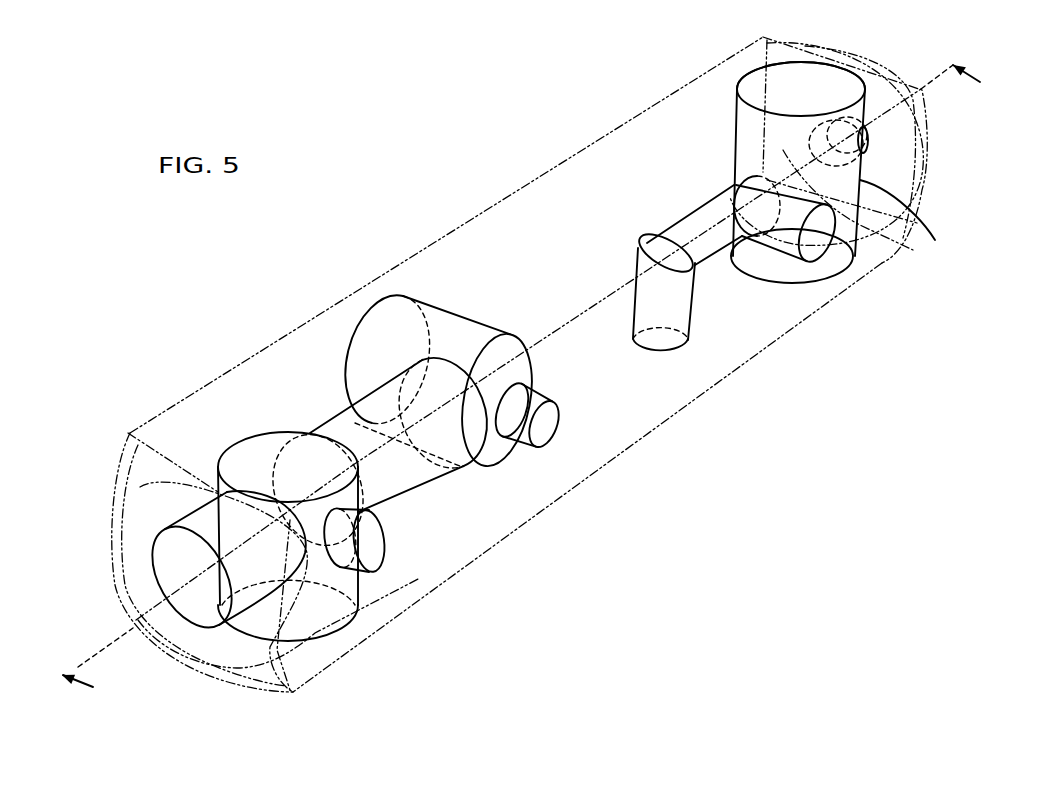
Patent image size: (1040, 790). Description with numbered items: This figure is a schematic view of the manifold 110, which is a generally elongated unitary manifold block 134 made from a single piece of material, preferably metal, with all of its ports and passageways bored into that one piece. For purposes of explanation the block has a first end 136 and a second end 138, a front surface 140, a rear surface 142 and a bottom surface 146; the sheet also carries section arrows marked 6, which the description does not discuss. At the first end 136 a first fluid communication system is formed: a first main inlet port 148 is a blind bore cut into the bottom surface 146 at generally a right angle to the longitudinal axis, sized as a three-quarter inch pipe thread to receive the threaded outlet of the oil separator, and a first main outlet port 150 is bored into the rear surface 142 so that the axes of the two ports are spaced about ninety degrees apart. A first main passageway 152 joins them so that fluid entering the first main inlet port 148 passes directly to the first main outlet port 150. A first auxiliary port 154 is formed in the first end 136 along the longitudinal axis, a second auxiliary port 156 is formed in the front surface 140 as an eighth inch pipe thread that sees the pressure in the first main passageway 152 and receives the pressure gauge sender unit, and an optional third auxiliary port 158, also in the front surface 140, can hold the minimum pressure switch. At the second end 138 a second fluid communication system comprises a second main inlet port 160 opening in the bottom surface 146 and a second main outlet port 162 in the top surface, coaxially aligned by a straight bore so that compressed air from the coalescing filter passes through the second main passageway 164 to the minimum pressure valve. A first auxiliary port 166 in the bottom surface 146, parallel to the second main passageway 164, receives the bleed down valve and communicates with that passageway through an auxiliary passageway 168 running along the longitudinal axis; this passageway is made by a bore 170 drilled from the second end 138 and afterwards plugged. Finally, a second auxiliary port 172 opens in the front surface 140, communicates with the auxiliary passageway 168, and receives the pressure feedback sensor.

The section line 6- 6 is at (533, 386).
The manifold 110 is at (523, 169).
The unitary manifold block 134 is at (313, 317).
The first end 136 is at (290, 695).
The second end 138 is at (926, 175).
The front surface 140 is at (770, 336).
The rear surface 142 is at (247, 387).
The bottom surface 146 is at (557, 477).
The first main inlet port 148 is at (355, 622).
The first main outlet port 150 is at (380, 307).
The first main passageway 152 is at (430, 487).
The first auxiliary port 154 is at (195, 640).
The second auxiliary port 156 is at (383, 551).
The third auxiliary port 158 is at (560, 428).
The second main inlet port 160 is at (835, 272).
The second main outlet port 162 is at (795, 58).
The second main passageway 164 is at (915, 216).
The first auxiliary port 166 is at (687, 347).
The auxiliary passageway 168 is at (690, 210).
The bore 170 is at (865, 120).
The second auxiliary port 172 is at (838, 270).